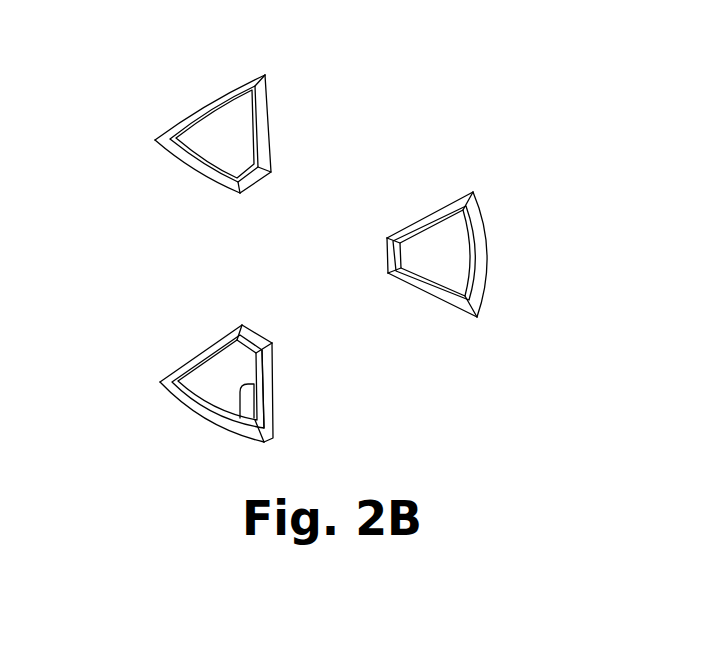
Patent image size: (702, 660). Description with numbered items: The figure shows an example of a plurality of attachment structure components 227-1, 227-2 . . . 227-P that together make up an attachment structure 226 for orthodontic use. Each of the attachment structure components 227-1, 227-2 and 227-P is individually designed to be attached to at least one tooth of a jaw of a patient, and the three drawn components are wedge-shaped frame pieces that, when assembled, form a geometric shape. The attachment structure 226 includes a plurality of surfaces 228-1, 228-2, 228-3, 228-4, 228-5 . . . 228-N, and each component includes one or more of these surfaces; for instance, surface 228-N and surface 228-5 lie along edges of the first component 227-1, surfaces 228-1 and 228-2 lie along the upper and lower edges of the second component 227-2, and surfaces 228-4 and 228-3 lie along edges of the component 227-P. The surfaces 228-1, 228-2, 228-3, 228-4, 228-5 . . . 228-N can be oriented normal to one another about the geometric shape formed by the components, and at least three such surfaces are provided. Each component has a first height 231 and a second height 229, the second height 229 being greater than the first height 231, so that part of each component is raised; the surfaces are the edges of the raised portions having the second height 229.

The attachment structure 226 is at (142, 78).
The attachment structure component 227-1 is at (196, 112).
The attachment structure component 227-2 is at (488, 246).
The attachment structure component 227-P is at (200, 415).
The surface 228-1 is at (436, 211).
The surface 228-2 is at (423, 291).
The surface 228-3 is at (274, 370).
The surface 228-4 is at (198, 356).
The surface 228-5 is at (193, 166).
The surface 228-N is at (271, 120).
The second height 229 is at (244, 414).
The first height 231 is at (275, 410).